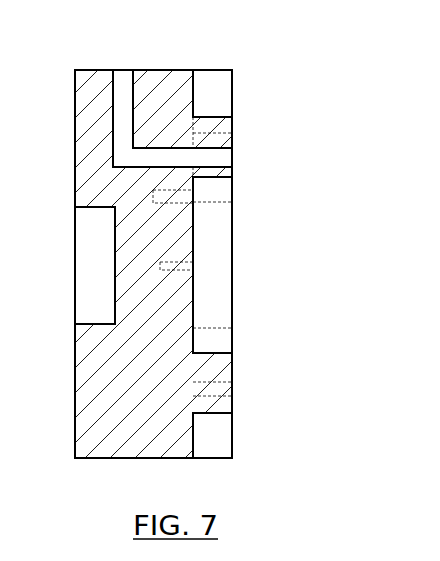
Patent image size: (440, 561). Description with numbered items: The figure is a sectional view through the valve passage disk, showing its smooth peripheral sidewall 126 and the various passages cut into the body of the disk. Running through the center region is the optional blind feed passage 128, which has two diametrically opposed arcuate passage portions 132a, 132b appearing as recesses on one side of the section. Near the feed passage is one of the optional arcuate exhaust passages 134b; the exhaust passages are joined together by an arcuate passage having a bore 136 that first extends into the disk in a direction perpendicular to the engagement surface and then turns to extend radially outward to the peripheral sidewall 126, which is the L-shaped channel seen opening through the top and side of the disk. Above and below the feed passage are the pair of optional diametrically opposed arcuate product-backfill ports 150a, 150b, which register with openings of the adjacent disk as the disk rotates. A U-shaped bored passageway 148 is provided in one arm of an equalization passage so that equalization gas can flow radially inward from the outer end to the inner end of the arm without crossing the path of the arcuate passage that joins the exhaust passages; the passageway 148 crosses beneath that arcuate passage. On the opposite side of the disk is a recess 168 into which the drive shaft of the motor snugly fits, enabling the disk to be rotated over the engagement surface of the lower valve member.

The sidewall 126 is at (163, 70).
The bore 136 is at (125, 80).
The arcuate product-backfill port 150a is at (213, 93).
The U-shaped bored passageway 148 is at (153, 192).
The arcuate passage portion 132a is at (213, 190).
The blind feed passage 128 is at (208, 288).
The arcuate exhaust passage 134b is at (162, 266).
The arcuate passage portion 132b is at (210, 344).
The recess 168 is at (95, 283).
The arcuate product-backfill port 150b is at (213, 438).